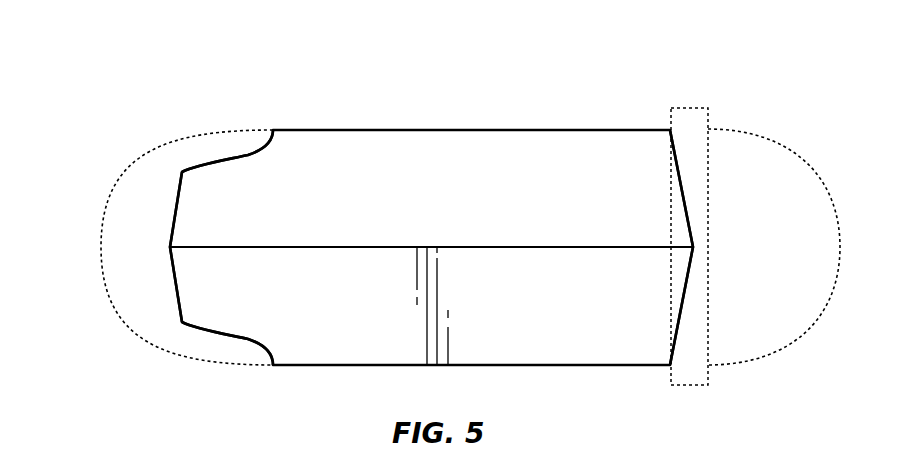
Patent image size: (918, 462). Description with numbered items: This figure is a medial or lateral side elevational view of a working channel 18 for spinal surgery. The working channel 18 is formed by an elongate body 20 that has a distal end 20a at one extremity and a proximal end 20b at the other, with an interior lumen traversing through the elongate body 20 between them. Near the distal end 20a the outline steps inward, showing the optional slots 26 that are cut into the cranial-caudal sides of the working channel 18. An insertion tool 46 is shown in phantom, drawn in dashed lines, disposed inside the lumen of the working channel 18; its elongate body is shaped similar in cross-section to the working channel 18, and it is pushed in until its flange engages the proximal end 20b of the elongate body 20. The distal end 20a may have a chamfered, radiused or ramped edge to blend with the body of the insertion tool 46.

The working channel 18 is at (292, 82).
The elongate body 20 is at (438, 140).
The distal end 20a is at (177, 212).
The proximal end 20b is at (673, 135).
The slots 26 is at (235, 143).
The insertion tool 46 is at (822, 171).